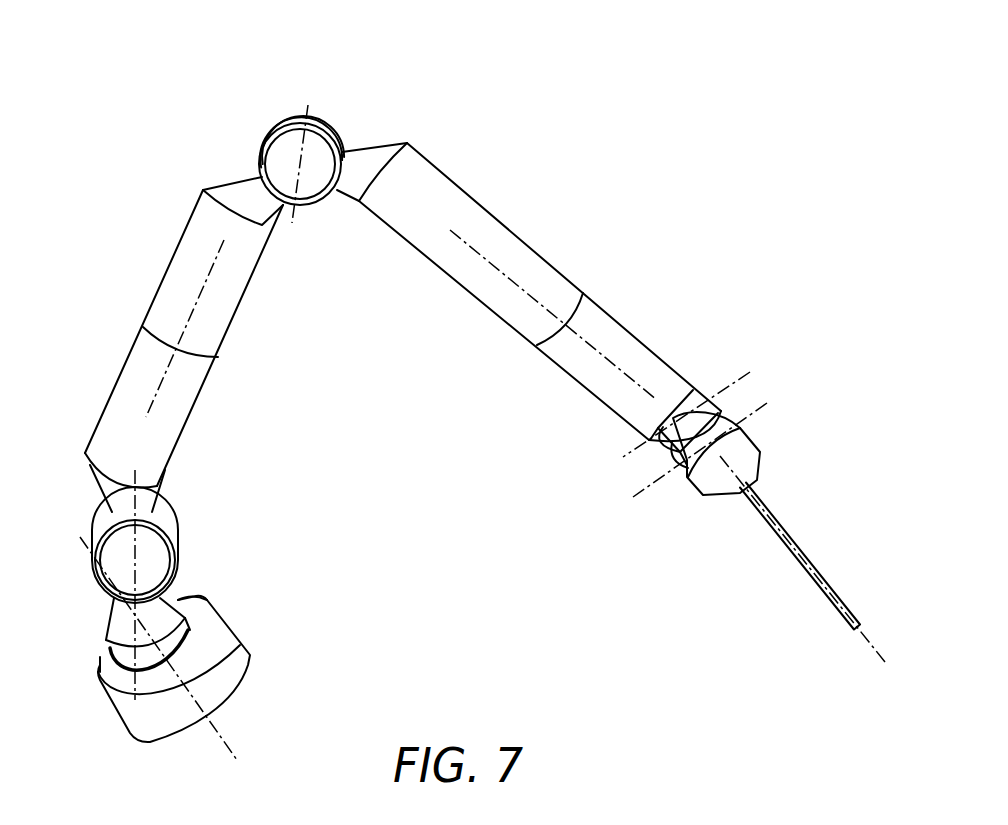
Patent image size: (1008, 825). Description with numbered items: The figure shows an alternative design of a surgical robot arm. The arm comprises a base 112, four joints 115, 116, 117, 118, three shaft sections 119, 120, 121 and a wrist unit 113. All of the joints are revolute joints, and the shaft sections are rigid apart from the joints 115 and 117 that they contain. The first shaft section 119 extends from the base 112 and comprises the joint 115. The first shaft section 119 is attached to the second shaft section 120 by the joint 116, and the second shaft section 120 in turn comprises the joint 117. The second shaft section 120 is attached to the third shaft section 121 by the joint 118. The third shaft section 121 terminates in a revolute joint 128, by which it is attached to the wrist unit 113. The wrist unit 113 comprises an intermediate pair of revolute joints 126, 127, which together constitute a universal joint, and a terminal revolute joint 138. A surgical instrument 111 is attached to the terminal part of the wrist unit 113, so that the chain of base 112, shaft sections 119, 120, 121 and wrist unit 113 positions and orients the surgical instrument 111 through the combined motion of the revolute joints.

The surgical instrument 111 is at (792, 540).
The base 112 is at (230, 640).
The wrist unit 113 is at (758, 459).
The joint 115 is at (178, 597).
The joint 116 is at (178, 543).
The joint 117 is at (218, 357).
The joint 118 is at (323, 137).
The first shaft section 119 is at (108, 662).
The second shaft section 120 is at (187, 344).
The third shaft section 121 is at (529, 292).
The revolute joint 126 is at (720, 402).
The revolute joint 127 is at (662, 458).
The revolute joint 128 is at (537, 347).
The terminal revolute joint 138 is at (745, 424).